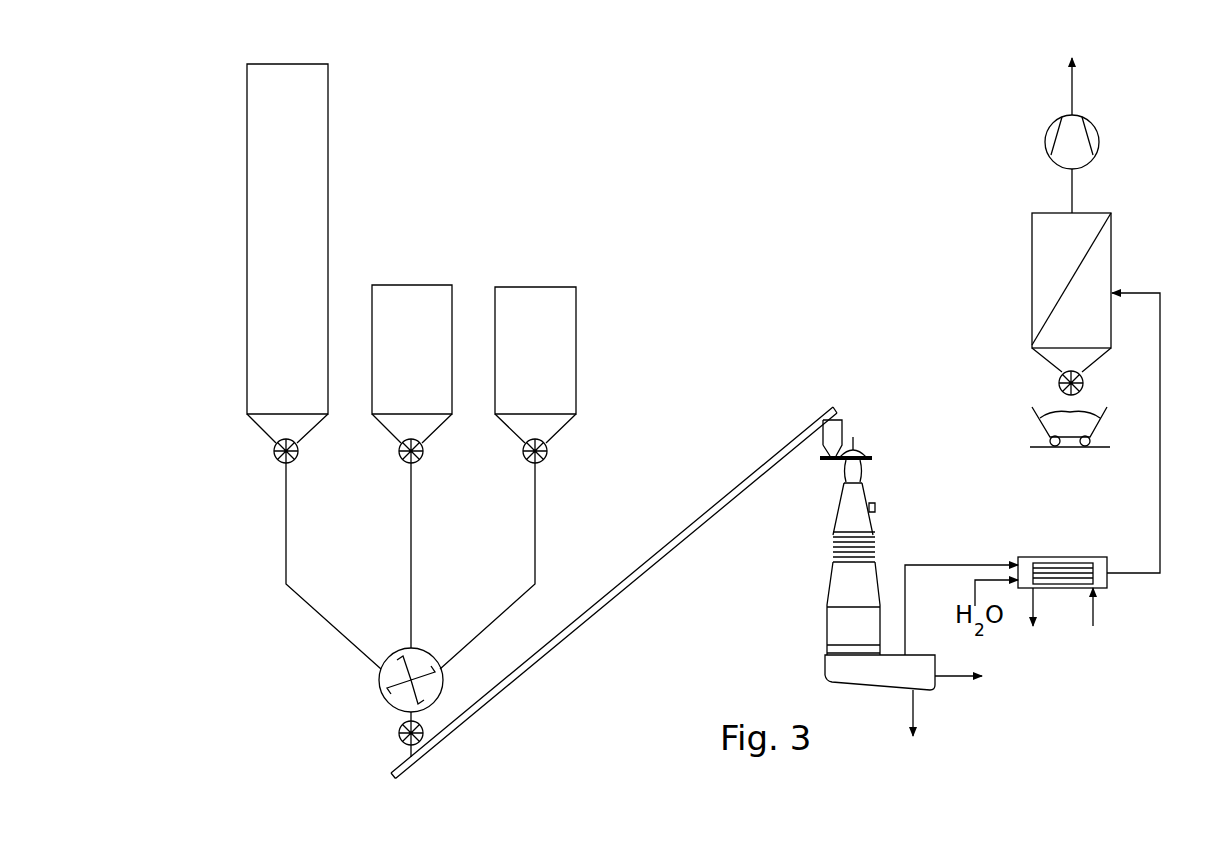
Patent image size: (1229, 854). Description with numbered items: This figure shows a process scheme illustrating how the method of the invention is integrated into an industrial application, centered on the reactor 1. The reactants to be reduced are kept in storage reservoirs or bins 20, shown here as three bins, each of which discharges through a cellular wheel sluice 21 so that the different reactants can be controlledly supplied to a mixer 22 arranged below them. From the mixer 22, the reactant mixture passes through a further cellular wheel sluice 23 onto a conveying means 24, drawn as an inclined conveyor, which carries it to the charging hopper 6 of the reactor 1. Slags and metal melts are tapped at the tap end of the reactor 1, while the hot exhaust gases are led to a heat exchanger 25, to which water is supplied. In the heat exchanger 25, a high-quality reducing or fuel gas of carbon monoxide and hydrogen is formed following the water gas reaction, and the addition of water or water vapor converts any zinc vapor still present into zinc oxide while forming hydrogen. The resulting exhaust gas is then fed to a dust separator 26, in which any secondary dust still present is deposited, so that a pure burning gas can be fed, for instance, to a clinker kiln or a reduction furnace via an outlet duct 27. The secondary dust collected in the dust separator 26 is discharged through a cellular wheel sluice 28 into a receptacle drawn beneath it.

The reactor 1 is at (882, 465).
The charging hopper 6 is at (836, 432).
The storage reservoirs or bins 20 is at (329, 124).
The cellular wheel sluices 21 is at (278, 462).
The mixer 22 is at (424, 650).
The cellular wheel sluice 23 is at (397, 743).
The conveying means 24 is at (497, 694).
The heat exchanger 25 is at (1050, 557).
The dust separator 26 is at (1112, 250).
The outlet duct 27 is at (1070, 190).
The cellular wheel sluice 28 is at (1058, 381).